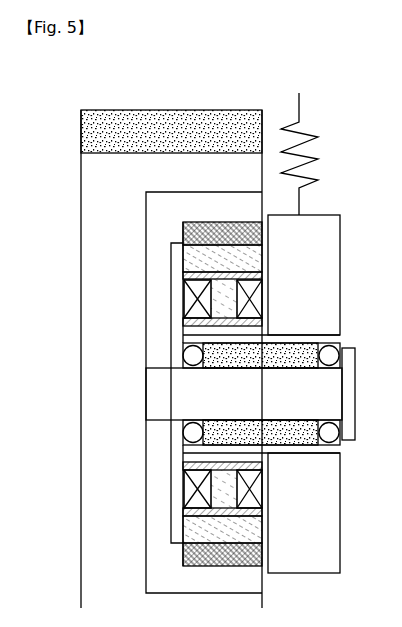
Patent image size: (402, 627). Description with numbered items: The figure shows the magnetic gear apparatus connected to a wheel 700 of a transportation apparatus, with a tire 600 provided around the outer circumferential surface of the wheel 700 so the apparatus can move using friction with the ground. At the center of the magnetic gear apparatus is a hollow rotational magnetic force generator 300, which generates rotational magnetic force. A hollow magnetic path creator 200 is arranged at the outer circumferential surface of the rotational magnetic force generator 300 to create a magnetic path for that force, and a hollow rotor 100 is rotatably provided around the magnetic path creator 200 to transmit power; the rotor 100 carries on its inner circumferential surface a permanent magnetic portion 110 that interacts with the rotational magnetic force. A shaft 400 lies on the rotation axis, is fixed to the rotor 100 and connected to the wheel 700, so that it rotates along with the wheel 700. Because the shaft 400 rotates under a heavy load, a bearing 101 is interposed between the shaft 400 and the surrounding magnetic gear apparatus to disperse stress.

The rotor 100 is at (146, 200).
The bearing 101 is at (186, 428).
The permanent magnetic portion 110 is at (183, 229).
The magnetic path creator 200 is at (190, 256).
The rotational magnetic force generator 300 is at (215, 298).
The shaft 400 is at (146, 403).
The tire 600 is at (214, 113).
The wheel 700 is at (82, 168).